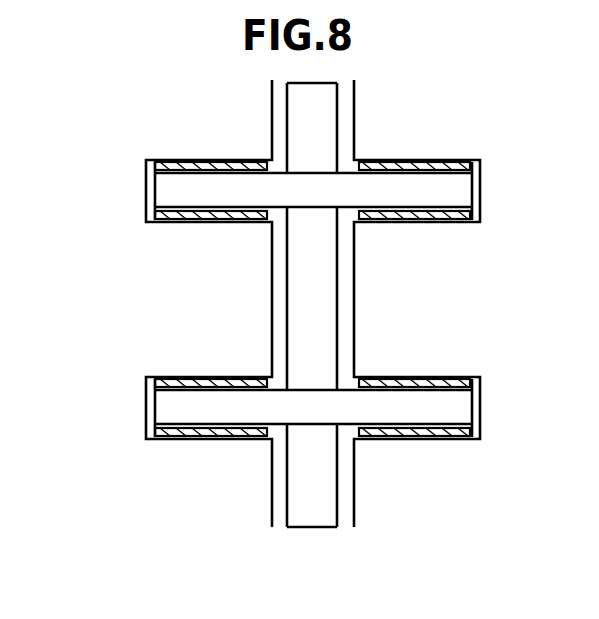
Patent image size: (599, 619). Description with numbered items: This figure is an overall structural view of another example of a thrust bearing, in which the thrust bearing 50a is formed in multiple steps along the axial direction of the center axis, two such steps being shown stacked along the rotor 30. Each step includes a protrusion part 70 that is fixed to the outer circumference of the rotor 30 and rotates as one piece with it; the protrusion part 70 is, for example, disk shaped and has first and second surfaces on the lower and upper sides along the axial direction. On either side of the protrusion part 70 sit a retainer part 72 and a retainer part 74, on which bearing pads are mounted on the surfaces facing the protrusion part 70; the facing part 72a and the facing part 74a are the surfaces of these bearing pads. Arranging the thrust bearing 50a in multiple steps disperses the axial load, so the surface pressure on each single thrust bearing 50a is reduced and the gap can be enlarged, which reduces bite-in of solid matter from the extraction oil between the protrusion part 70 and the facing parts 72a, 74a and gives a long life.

The rotor 30 is at (317, 518).
The thrust bearing 50a is at (127, 146).
The protrusion part 70 is at (460, 193).
The retainer part 72 is at (173, 228).
The facing part 72a is at (240, 205).
The retainer part 74 is at (179, 160).
The facing part 74a is at (389, 178).